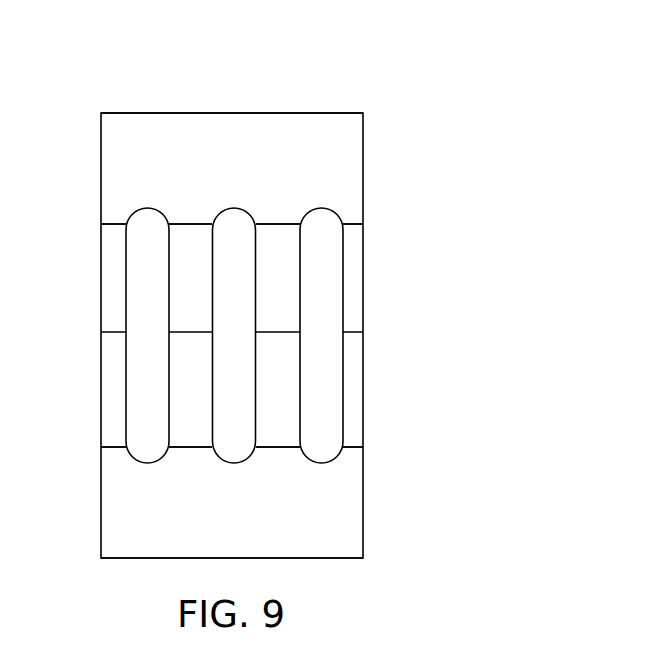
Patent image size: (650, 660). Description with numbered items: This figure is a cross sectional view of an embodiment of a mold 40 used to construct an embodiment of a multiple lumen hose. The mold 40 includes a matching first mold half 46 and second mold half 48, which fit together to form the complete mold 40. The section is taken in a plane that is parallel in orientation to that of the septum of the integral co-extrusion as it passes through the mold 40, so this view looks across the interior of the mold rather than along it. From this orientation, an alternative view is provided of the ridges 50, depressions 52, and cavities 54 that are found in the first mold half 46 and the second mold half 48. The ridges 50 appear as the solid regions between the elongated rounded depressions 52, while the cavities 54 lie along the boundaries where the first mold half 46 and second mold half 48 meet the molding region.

The mold 40 is at (180, 86).
The first mold half 46 is at (363, 173).
The second mold half 48 is at (363, 497).
The ridges 50 is at (115, 283).
The depressions 52 is at (135, 300).
The cavities 54 is at (110, 221).